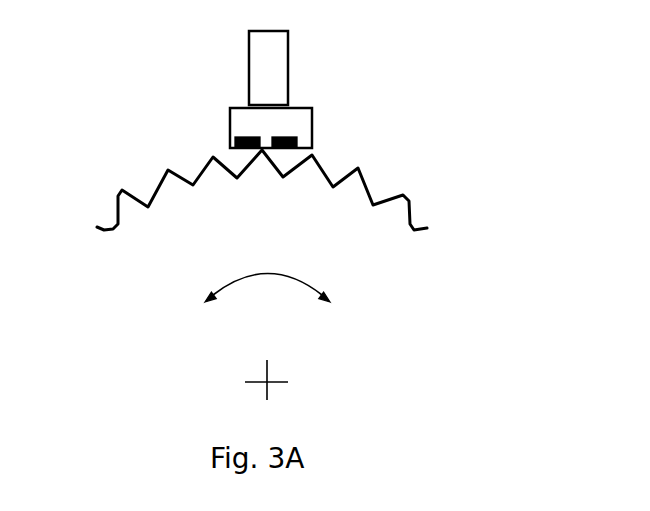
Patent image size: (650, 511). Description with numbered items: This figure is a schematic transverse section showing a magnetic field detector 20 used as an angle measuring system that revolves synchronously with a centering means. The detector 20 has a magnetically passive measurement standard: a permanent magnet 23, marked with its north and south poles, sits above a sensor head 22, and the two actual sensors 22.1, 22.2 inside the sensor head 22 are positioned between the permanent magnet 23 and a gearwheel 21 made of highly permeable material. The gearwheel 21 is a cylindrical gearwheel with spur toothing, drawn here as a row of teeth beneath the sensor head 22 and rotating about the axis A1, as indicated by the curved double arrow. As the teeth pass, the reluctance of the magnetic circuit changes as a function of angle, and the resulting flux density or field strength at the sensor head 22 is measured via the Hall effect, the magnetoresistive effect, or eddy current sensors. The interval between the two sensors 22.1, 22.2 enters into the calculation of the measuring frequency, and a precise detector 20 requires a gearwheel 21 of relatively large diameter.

The magnetic field detector 20 is at (427, 67).
The gearwheel 21 is at (117, 204).
The sensor head 22 is at (238, 167).
The sensor 22.1 is at (241, 150).
The sensor 22.2 is at (285, 150).
The permanent magnet 23 is at (249, 33).
The axis of rotation A1 is at (262, 382).